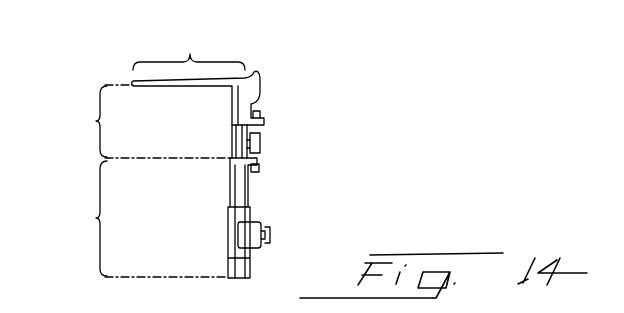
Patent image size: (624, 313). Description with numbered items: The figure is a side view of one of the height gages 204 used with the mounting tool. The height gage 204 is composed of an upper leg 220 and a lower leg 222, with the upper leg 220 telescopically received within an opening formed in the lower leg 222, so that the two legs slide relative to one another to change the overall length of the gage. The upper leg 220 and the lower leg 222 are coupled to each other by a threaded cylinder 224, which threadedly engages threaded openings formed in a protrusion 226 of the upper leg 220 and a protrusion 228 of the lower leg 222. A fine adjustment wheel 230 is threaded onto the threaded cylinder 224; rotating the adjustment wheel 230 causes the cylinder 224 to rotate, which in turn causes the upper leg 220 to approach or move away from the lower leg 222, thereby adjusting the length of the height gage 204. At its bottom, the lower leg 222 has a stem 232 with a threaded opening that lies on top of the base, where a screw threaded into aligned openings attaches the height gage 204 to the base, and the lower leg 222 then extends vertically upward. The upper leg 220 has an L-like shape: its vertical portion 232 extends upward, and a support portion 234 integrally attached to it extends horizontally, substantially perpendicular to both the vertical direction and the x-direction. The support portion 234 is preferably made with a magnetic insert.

The height gage 204 is at (300, 151).
The upper leg 220 is at (73, 121).
The lower leg 222 is at (71, 218).
The threaded cylinder 224 is at (259, 168).
The protrusion 226 is at (264, 120).
The protrusion 228 is at (258, 176).
The fine adjustment wheel 230 is at (262, 145).
The stem / vertical portion 232 is at (259, 77).
The support portion 234 is at (189, 50).